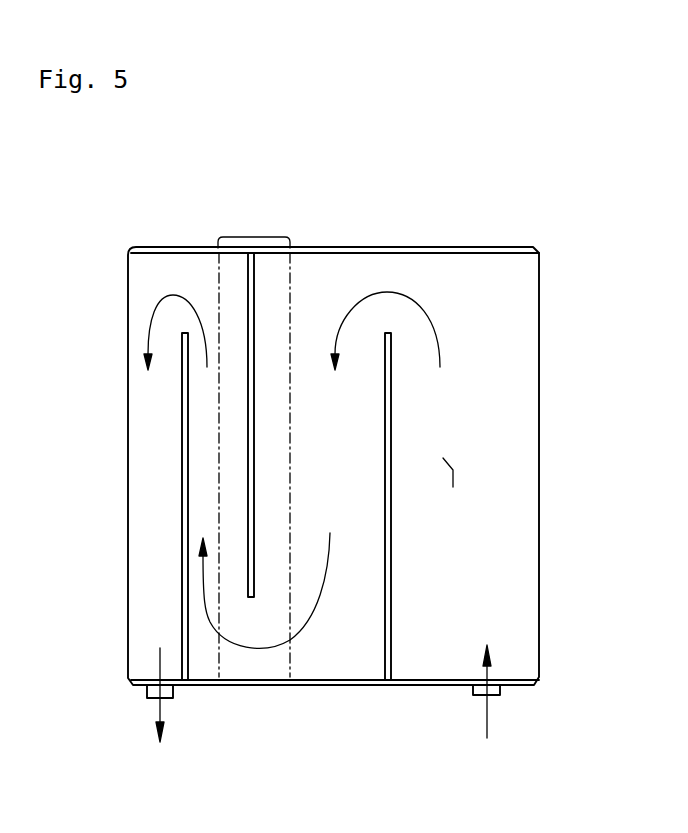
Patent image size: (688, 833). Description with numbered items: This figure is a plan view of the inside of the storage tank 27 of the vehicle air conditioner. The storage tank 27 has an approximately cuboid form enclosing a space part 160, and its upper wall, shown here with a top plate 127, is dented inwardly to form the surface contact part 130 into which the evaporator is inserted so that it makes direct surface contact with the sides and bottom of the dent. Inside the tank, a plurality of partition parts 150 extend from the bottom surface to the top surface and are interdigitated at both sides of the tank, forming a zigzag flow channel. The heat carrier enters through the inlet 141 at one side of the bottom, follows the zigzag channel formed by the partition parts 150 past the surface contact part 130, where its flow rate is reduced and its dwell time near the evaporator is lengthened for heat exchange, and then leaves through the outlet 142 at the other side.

The storage tank 27 is at (473, 240).
The top plate 127 is at (395, 248).
The surface contact part 130 is at (253, 236).
The partition parts 150 is at (385, 592).
The space part 160 is at (453, 471).
The outlet 142 is at (147, 690).
The inlet 141 is at (500, 689).